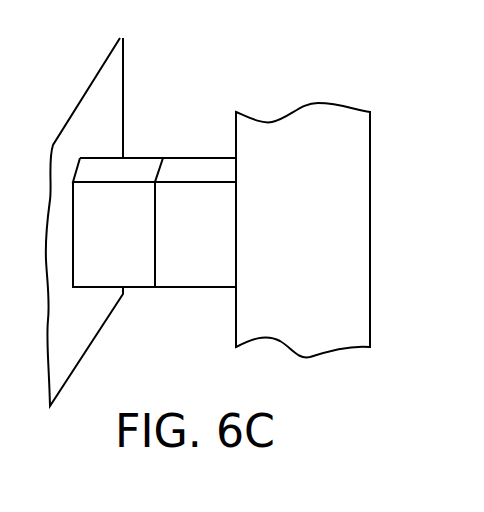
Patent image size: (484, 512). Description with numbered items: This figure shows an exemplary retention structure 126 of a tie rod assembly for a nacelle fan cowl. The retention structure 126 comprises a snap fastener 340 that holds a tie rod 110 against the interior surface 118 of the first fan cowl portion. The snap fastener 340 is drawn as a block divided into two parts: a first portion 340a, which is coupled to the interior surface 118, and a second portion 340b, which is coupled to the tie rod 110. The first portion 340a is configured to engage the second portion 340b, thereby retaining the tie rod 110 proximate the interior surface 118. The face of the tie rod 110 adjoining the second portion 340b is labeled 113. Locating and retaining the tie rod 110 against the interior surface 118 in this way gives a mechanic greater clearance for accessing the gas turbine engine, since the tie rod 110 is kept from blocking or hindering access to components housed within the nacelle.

The tie rod 110 is at (372, 218).
The panel surface 113 is at (330, 301).
The interior surface 118 is at (93, 323).
The retention structure 126 is at (166, 120).
The snap fastener 340 is at (232, 193).
The first portion 340a is at (127, 252).
The second portion 340b is at (222, 250).